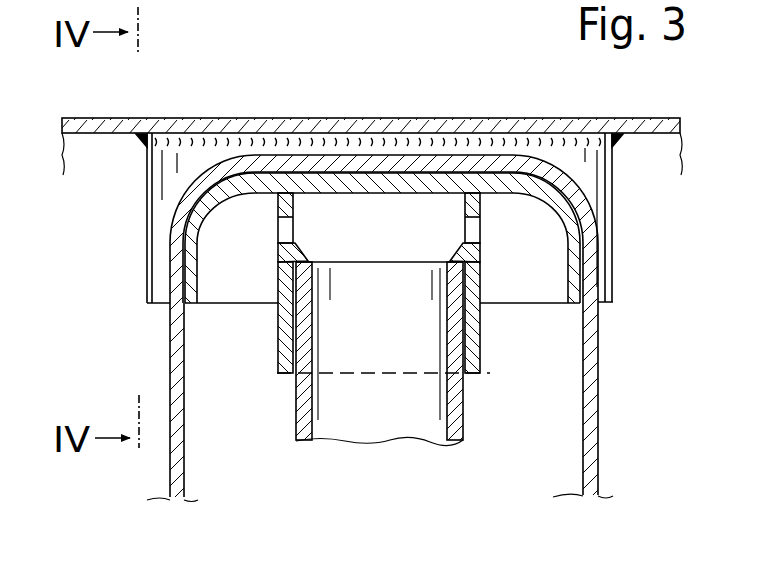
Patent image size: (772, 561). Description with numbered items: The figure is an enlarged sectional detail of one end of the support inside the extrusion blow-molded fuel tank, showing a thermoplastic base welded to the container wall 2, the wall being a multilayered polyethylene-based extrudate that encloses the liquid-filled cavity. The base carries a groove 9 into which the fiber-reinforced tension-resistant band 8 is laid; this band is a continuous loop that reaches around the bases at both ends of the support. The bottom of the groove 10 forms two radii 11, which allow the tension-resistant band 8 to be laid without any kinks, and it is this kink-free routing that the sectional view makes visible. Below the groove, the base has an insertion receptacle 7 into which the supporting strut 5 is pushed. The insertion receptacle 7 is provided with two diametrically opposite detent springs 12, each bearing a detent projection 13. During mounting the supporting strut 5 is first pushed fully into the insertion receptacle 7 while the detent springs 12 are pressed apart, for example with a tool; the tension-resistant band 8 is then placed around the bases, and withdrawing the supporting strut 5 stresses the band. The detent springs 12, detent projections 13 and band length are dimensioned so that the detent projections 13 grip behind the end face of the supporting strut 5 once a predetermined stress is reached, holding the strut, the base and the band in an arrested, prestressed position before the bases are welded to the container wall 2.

The container wall 2 is at (302, 125).
The supporting strut 5 is at (463, 418).
The insertion receptacle 7 is at (480, 370).
The tension-resistant band 8 is at (597, 412).
The groove 9 is at (537, 150).
The bottom of the groove 10 is at (448, 178).
The radii 11 is at (218, 198).
The detent springs 12 is at (283, 310).
The detent projections 13 is at (302, 260).